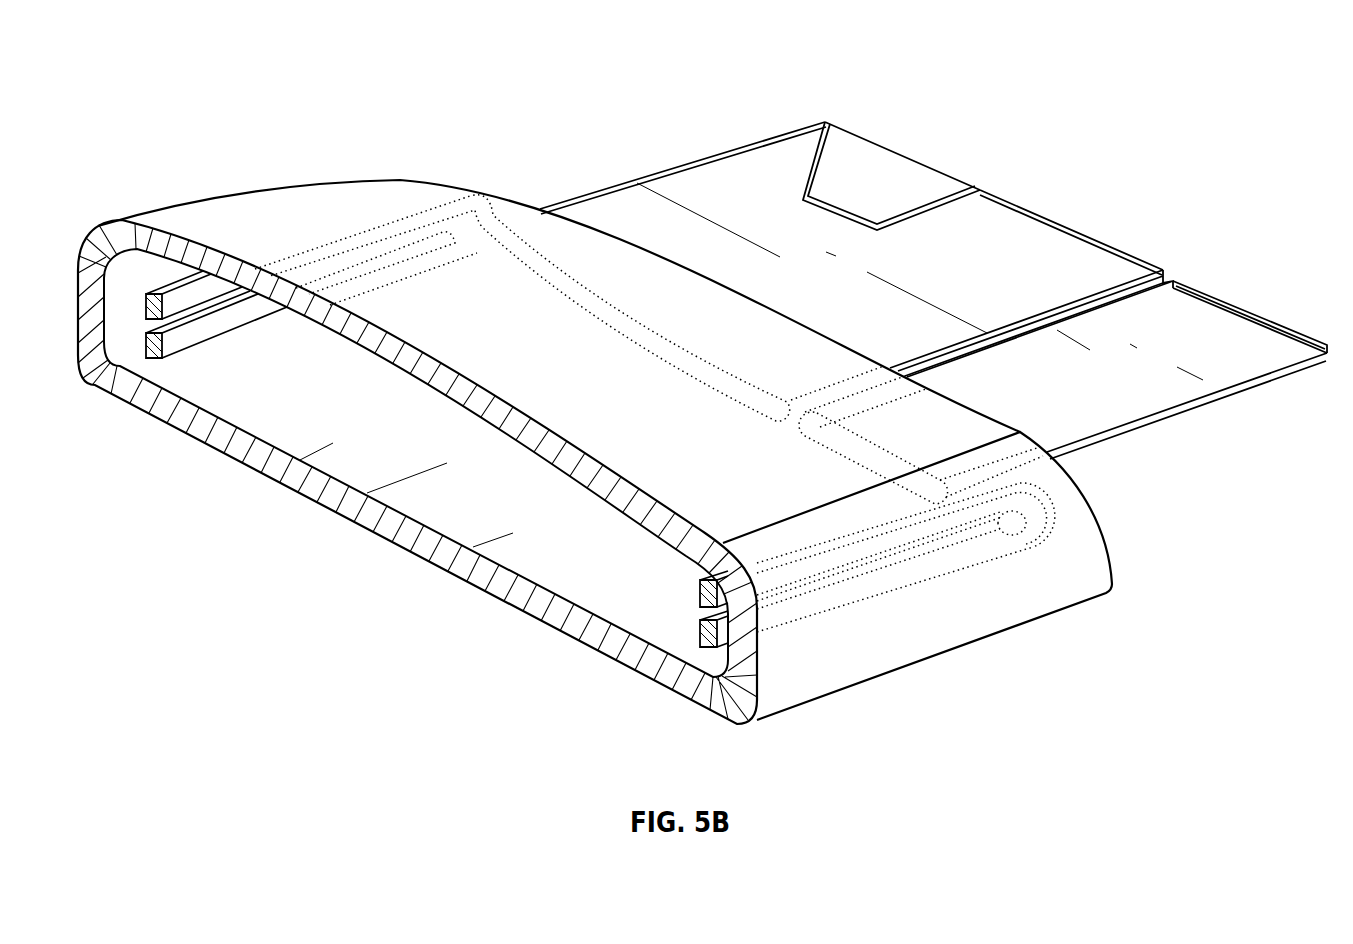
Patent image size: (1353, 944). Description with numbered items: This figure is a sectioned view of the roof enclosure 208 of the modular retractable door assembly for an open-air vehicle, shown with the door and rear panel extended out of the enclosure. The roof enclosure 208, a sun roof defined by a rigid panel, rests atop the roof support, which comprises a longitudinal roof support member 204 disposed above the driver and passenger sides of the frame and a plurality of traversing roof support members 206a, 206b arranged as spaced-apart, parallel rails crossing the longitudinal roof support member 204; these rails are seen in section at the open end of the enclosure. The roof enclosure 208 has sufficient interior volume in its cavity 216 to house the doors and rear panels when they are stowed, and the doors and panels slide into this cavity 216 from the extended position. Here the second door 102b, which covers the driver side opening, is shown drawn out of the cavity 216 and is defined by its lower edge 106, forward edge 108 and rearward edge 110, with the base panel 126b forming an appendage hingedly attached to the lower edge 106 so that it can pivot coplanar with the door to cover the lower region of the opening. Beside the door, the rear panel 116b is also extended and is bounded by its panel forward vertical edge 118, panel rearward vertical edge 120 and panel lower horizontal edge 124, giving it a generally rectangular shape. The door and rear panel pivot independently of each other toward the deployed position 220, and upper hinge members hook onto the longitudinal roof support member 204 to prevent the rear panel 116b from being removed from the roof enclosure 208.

The deployed position 220 is at (216, 116).
The cavity 216 is at (538, 563).
The roof enclosure 208 is at (1066, 617).
The longitudinal roof support member 204 is at (527, 275).
The traversing roof support member 206a is at (821, 600).
The traversing roof support member 206b is at (183, 342).
The second door 102b is at (990, 274).
The forward edge 108 is at (713, 152).
The base panel 126b is at (890, 197).
The lower edge 106 is at (1027, 213).
The rearward edge 110 is at (1093, 293).
The panel forward vertical edge 118 is at (1142, 287).
The rear panel 116b is at (1063, 400).
The panel lower horizontal edge 124 is at (1250, 316).
The panel rearward vertical edge 120 is at (1223, 391).